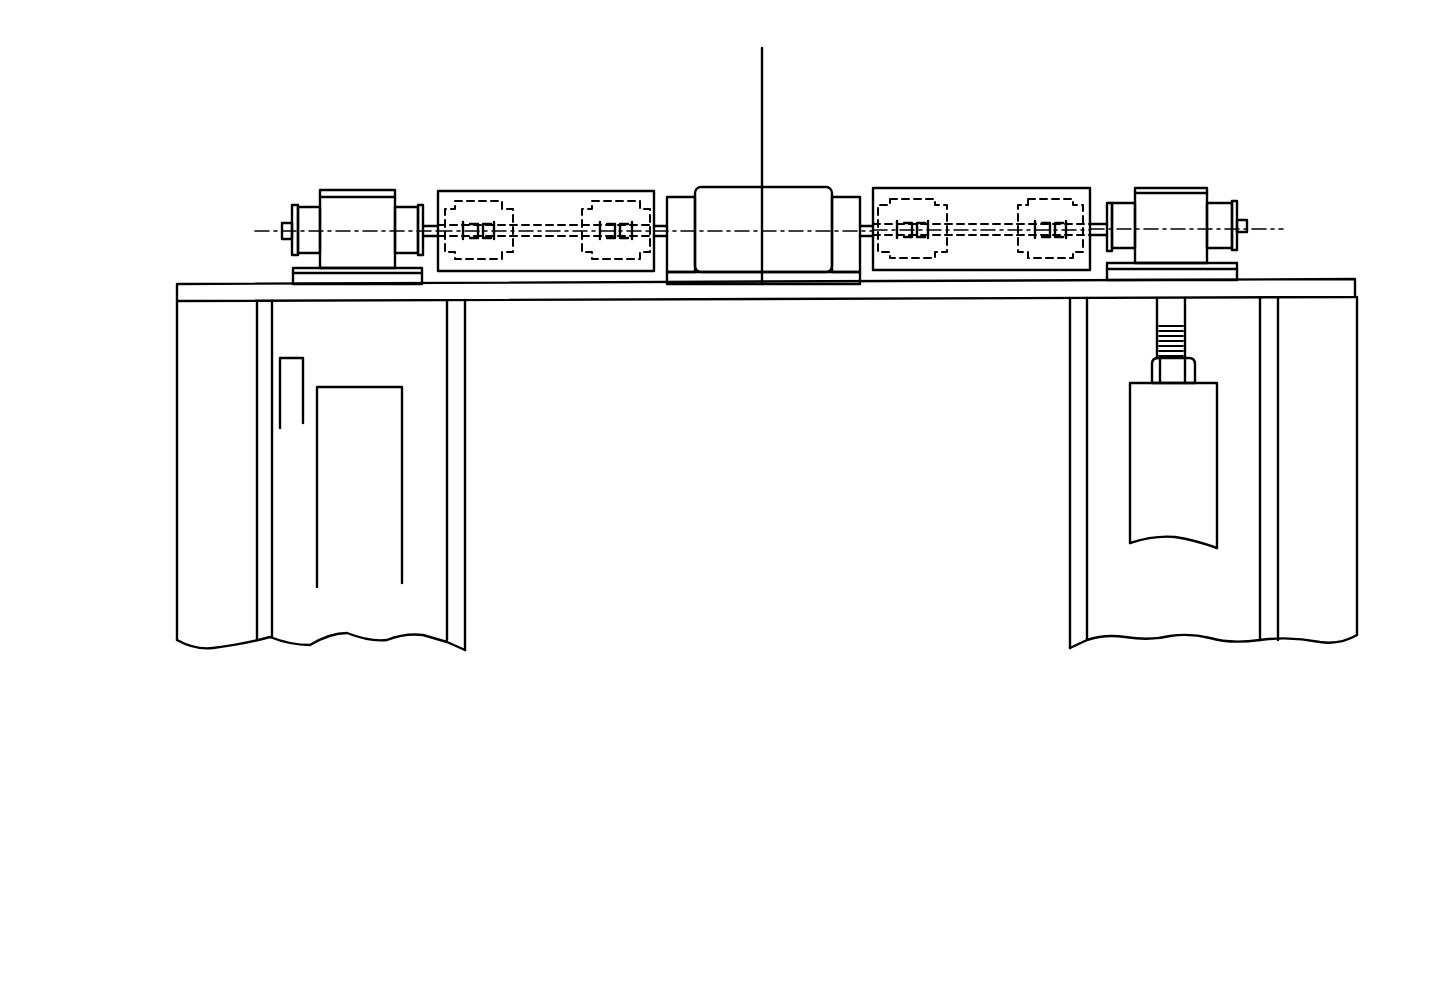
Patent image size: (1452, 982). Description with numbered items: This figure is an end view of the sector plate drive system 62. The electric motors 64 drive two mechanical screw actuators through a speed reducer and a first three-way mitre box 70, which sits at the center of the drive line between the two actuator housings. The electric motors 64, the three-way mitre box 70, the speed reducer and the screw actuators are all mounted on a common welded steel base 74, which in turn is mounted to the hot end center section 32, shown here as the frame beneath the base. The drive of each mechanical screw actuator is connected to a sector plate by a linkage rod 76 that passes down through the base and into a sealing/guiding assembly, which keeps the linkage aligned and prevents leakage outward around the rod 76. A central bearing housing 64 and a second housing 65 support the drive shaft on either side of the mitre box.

The hot end center section 32 is at (1331, 513).
The sector plate drive system 62 is at (333, 138).
The electric motor 64 is at (546, 231).
The right bearing housing 65 is at (981, 229).
The first 3-way mitre box 70 is at (738, 210).
The welded steel base 74 is at (200, 285).
The linkage rod 76 is at (1089, 340).